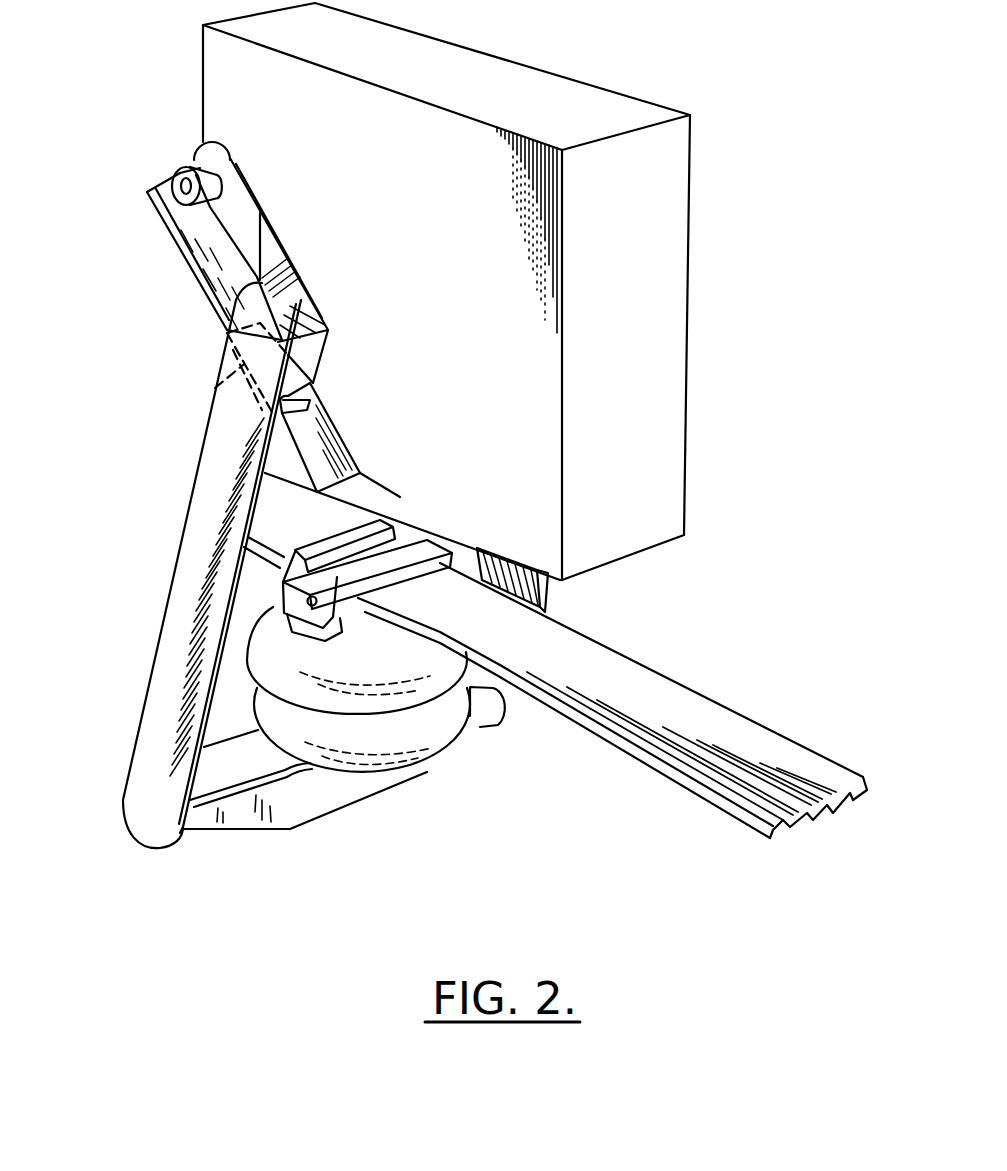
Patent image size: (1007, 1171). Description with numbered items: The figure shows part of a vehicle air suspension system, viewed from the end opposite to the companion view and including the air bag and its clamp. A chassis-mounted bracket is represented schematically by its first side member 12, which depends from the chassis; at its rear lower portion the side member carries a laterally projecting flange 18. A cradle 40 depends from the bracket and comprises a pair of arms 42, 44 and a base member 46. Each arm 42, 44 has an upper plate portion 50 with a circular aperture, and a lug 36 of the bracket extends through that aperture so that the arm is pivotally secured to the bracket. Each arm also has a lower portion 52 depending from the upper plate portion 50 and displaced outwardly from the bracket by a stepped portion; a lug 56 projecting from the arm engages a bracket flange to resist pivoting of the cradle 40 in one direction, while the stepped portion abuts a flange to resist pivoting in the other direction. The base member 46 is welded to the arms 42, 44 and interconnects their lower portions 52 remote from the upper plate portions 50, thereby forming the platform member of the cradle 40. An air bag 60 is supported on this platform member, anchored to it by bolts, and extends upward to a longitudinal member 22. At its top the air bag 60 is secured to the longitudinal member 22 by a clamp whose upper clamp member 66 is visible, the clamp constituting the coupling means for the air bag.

The first side member 12 is at (436, 298).
The flange 18 is at (220, 262).
The longitudinal member 22 is at (700, 713).
The lug 36 is at (183, 164).
The cradle 40 is at (332, 852).
The arm 42 is at (128, 696).
The arm 44 is at (552, 606).
The base member 46 is at (235, 773).
The upper plate portion 50 is at (218, 145).
The lower portion 52 is at (182, 592).
The lug 56 is at (213, 390).
The air bag 60 is at (433, 724).
The upper clamp member 66 is at (413, 525).